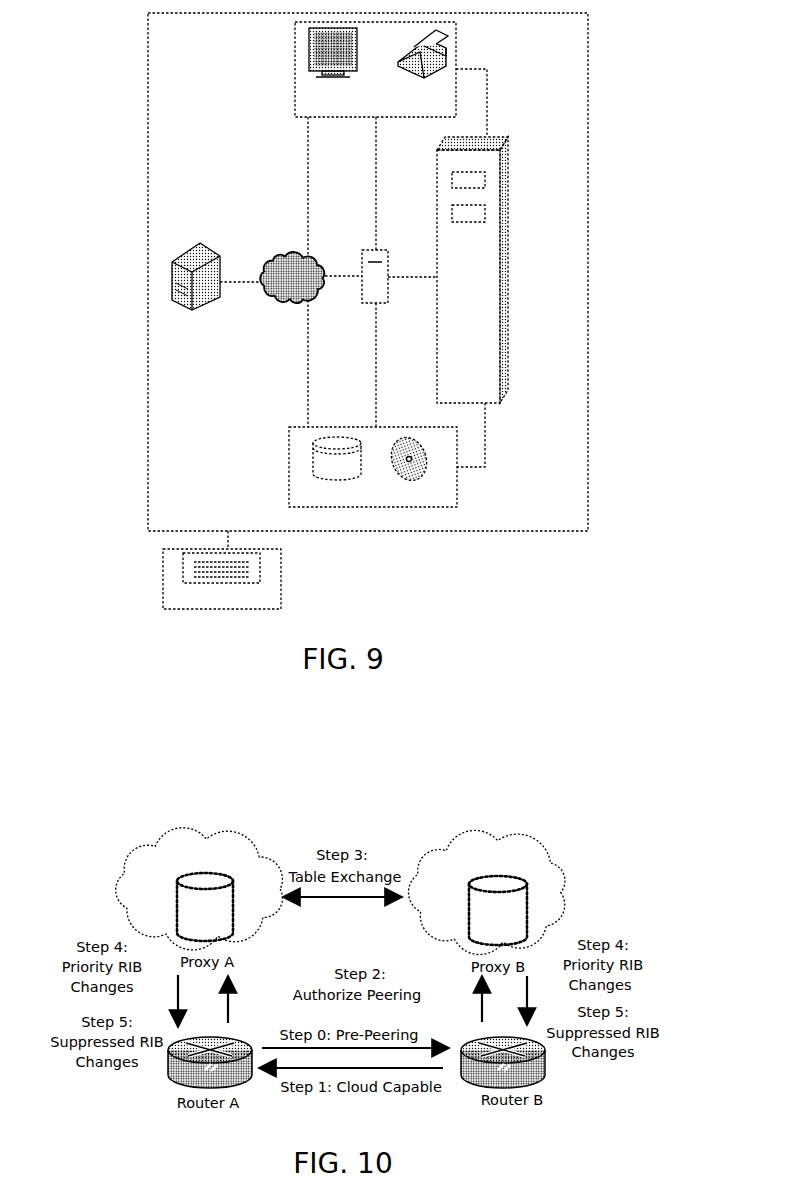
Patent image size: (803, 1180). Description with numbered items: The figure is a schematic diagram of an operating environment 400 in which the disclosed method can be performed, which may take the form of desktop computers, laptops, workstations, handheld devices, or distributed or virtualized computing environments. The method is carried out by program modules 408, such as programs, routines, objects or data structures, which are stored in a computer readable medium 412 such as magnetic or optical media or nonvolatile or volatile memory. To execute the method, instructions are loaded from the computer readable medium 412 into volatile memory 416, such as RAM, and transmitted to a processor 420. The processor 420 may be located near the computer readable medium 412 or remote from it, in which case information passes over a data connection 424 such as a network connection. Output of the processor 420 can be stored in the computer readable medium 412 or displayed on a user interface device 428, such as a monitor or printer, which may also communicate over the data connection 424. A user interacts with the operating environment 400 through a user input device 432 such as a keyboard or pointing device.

The operating environment 400 is at (127, 146).
The user interface device 428 is at (375, 69).
The program modules 408 is at (485, 213).
The volatile memory 416 is at (483, 308).
The data connection 424 is at (295, 255).
The processor 420 is at (208, 302).
The computer readable medium 412 is at (373, 467).
The user input device 432 is at (222, 579).